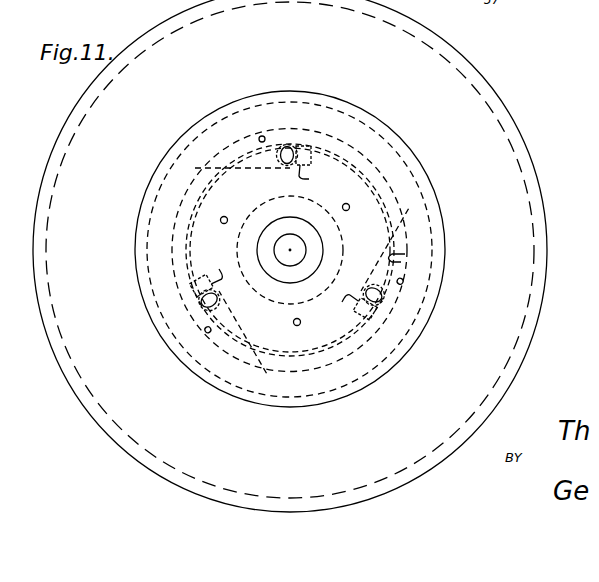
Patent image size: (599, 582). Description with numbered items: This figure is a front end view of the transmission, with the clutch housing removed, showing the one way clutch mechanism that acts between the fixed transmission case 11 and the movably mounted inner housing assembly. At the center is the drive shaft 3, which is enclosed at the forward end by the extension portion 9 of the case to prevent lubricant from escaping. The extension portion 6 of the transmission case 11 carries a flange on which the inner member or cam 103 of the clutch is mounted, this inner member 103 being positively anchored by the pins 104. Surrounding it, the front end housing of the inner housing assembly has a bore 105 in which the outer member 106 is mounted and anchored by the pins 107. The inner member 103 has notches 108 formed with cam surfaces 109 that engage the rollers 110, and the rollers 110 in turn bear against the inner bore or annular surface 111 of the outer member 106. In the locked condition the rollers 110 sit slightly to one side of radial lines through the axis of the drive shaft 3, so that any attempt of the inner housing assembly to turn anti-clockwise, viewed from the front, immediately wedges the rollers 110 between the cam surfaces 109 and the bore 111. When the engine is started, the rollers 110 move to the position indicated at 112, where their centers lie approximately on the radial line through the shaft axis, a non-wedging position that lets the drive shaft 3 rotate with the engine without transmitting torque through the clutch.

The drive shaft 3 is at (303, 238).
The extension portion 6 is at (425, 173).
The extension portion 9 is at (323, 243).
The transmission case 11 is at (497, 92).
The inner member or cam 103 is at (337, 330).
The pins 104 is at (349, 204).
The bore 105 is at (420, 270).
The outer member 106 is at (400, 242).
The pins 107 is at (262, 136).
The notches 108 is at (309, 154).
The cam surfaces 109 is at (214, 275).
The rollers 110 is at (280, 156).
The inner bore or annular surface 111 is at (276, 150).
The roller non-engaging position 112 is at (302, 147).